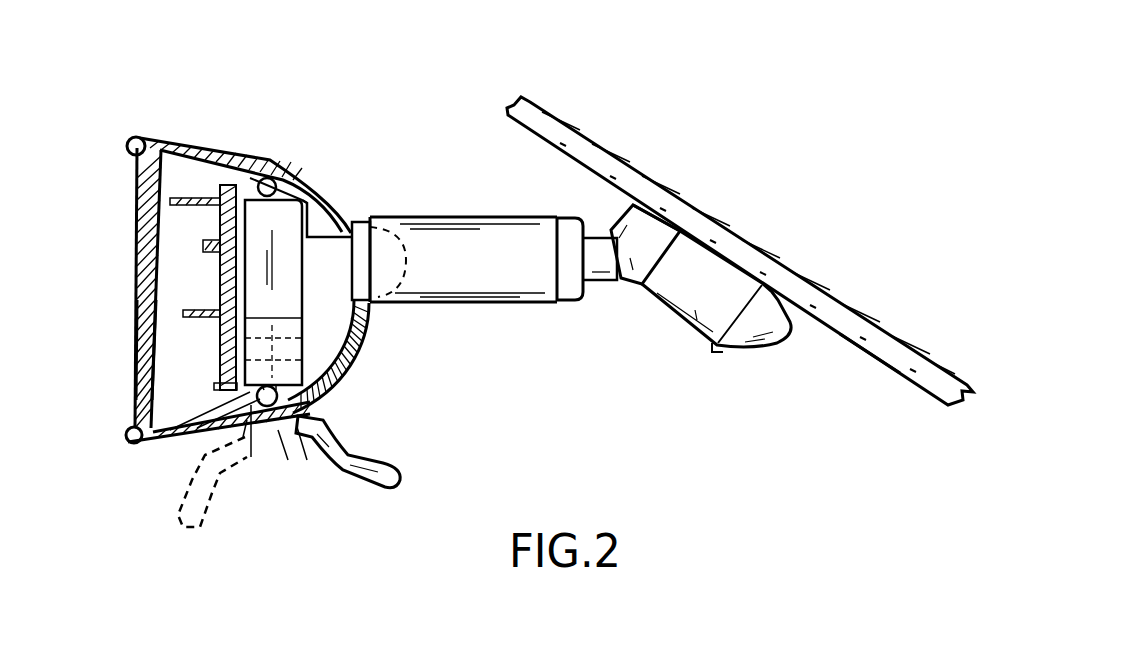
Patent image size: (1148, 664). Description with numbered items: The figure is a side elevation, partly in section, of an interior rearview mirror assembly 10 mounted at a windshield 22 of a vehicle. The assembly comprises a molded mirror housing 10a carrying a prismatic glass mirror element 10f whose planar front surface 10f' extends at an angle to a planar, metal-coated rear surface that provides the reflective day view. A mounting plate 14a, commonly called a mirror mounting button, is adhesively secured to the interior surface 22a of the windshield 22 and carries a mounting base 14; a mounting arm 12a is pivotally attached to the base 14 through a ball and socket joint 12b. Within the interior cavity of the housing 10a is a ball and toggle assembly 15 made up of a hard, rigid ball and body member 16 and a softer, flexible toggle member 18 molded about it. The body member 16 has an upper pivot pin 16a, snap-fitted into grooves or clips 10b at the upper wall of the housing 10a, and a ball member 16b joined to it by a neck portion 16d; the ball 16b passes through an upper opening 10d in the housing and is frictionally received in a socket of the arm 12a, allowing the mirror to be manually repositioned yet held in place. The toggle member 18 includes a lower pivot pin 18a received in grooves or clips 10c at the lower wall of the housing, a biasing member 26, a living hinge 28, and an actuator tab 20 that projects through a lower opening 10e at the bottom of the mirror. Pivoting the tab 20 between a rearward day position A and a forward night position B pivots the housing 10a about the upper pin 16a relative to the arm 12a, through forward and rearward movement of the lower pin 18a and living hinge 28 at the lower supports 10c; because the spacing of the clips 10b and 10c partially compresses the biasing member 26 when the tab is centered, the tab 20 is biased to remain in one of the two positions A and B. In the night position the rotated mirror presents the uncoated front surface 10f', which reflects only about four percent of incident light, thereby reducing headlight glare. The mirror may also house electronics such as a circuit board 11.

The interior rearview mirror assembly 10 is at (263, 330).
The mirror housing 10a is at (187, 136).
The grooves or clips 10b is at (240, 192).
The grooves or clips 10c is at (251, 457).
The upper opening 10d is at (323, 250).
The lower opening 10e is at (289, 428).
The prismatic reflective mirror element 10f is at (122, 290).
The planar front surface 10f' is at (111, 356).
The circuit board 11 is at (220, 240).
The mounting arm 12a is at (518, 287).
The ball and socket joint 12b is at (572, 282).
The mounting base 14 is at (701, 269).
The mounting plate 14a is at (665, 216).
The ball and toggle assembly 15 is at (195, 192).
The ball and body member 16 is at (420, 205).
The upper pivot pin 16a is at (290, 200).
The ball member 16b is at (405, 216).
The neck portion 16d is at (355, 220).
The toggle member 18 is at (322, 344).
The lower pivot pin 18a is at (280, 430).
The actuator tab 20 is at (410, 467).
The windshield 22 is at (740, 275).
The interior surface 22a is at (862, 352).
The biasing member 26 is at (352, 381).
The living hinge 28 is at (212, 433).
The day position A is at (406, 497).
The night position B is at (185, 535).